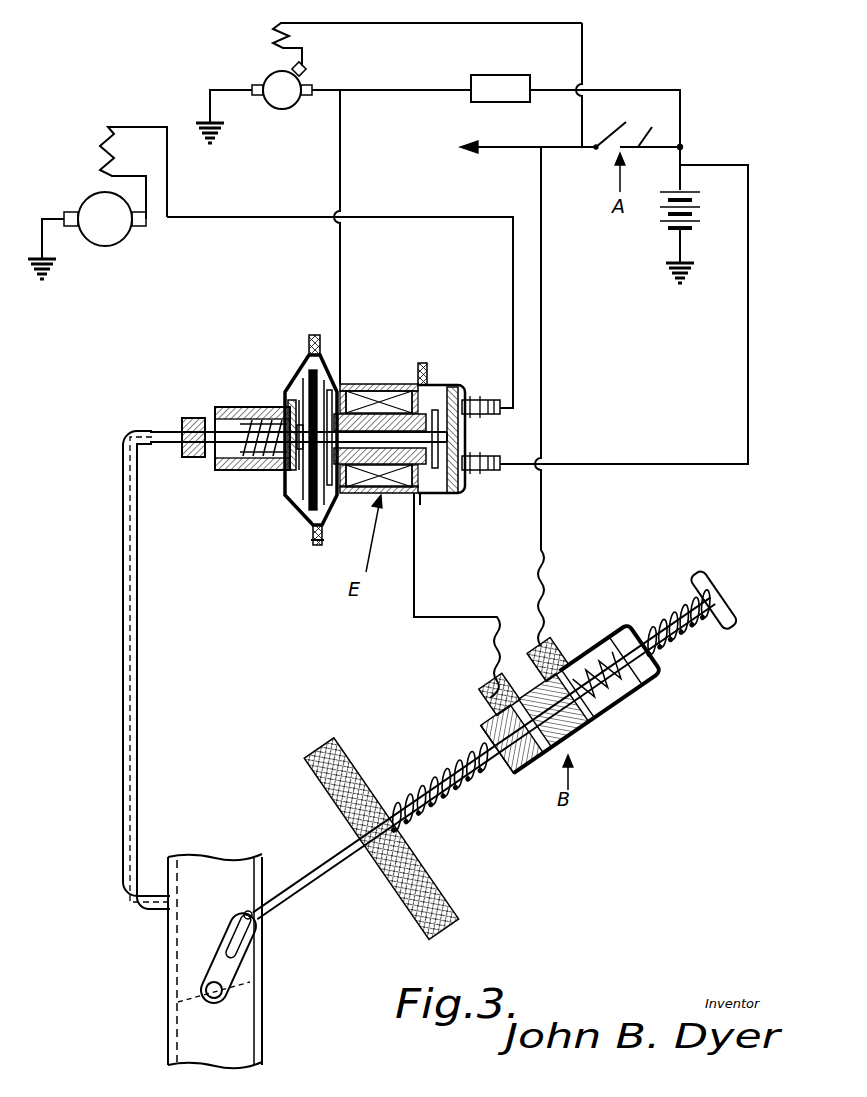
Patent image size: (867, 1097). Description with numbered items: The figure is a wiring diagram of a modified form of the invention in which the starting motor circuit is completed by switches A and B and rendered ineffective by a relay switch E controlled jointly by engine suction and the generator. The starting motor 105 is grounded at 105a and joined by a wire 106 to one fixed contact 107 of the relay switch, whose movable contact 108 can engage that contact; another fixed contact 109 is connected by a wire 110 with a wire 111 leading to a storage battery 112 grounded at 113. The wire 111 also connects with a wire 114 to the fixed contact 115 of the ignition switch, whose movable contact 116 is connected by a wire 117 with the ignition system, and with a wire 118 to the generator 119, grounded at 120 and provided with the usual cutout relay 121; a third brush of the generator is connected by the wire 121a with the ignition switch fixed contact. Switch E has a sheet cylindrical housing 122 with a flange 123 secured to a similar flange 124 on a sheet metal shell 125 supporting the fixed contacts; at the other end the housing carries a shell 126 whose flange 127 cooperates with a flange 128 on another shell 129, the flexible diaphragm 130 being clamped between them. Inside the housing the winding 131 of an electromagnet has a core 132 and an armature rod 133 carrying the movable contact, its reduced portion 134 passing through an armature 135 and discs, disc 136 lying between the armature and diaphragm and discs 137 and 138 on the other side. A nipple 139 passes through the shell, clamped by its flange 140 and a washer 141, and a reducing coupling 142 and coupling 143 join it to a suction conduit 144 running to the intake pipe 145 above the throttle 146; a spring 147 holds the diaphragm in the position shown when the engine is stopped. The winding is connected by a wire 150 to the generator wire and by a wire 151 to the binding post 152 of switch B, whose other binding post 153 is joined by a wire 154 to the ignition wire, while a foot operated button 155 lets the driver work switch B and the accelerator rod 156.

The starting motor 105 is at (108, 243).
The ground 105a is at (60, 252).
The wire 106 is at (211, 217).
The fixed contact 107 is at (492, 400).
The movable contact 108 is at (445, 493).
The fixed contact 109 is at (492, 472).
The wire 110 is at (746, 315).
The wire 111 is at (680, 127).
The storage battery 112 is at (693, 210).
The ground 113 is at (672, 248).
The wire 114 is at (663, 148).
The fixed contact 115 is at (642, 138).
The movable contact 116 is at (612, 130).
The wire 117 is at (566, 150).
The wire 118 is at (636, 88).
The generator 119 is at (296, 106).
The ground 120 is at (208, 100).
The cutout relay 121 is at (500, 74).
The wire 121a is at (398, 24).
The cylindrical housing 122 is at (378, 385).
The flange 123 is at (423, 363).
The flange 124 is at (432, 372).
The sheet metal shell 125 is at (462, 437).
The sheet metal shell 126 is at (324, 548).
The flange 127 is at (318, 548).
The flange 128 is at (312, 540).
The shell 129 is at (289, 508).
The flexible diaphragm 130 is at (300, 518).
The winding 131 is at (388, 493).
The core 132 is at (380, 392).
The rod 133 is at (358, 413).
The reduced portion 134 is at (340, 493).
The armature 135 is at (318, 368).
The metal disc 136 is at (305, 375).
The metal disc 137 is at (300, 372).
The metal disc 138 is at (304, 372).
The nipple 139 is at (270, 470).
The flange 140 is at (305, 395).
The washer 141 is at (292, 415).
The reducing coupling 142 is at (218, 470).
The coupling 143 is at (197, 418).
The suction conduit 144 is at (122, 598).
The intake pipe 145 is at (167, 960).
The throttle 146 is at (237, 985).
The spring 147 is at (242, 428).
The wire 150 is at (347, 246).
The wire 151 is at (415, 596).
The binding post 152 is at (491, 715).
The binding post 153 is at (565, 636).
The wire 154 is at (545, 384).
The foot operated button 155 is at (697, 598).
The accelerator rod 156 is at (502, 783).